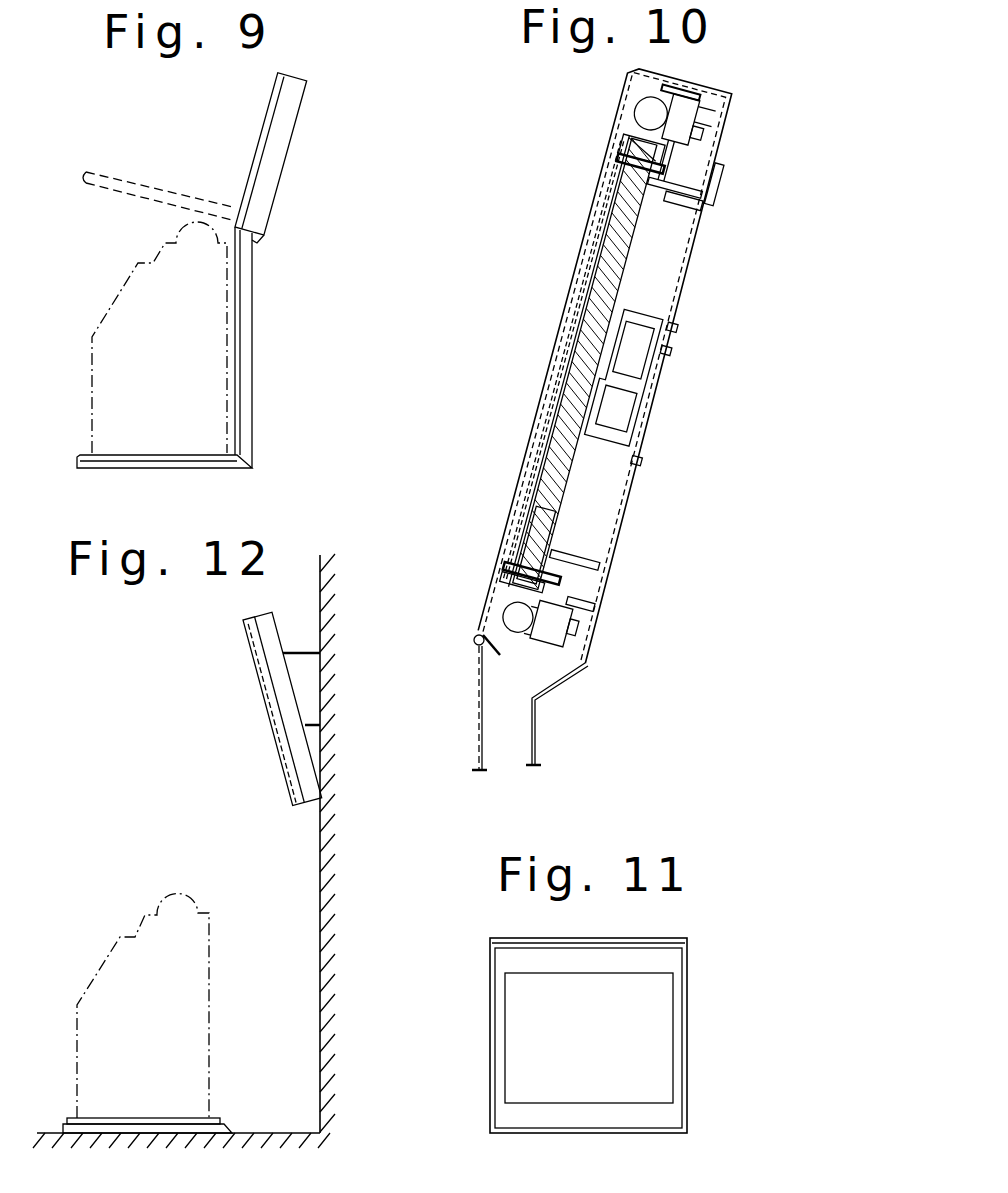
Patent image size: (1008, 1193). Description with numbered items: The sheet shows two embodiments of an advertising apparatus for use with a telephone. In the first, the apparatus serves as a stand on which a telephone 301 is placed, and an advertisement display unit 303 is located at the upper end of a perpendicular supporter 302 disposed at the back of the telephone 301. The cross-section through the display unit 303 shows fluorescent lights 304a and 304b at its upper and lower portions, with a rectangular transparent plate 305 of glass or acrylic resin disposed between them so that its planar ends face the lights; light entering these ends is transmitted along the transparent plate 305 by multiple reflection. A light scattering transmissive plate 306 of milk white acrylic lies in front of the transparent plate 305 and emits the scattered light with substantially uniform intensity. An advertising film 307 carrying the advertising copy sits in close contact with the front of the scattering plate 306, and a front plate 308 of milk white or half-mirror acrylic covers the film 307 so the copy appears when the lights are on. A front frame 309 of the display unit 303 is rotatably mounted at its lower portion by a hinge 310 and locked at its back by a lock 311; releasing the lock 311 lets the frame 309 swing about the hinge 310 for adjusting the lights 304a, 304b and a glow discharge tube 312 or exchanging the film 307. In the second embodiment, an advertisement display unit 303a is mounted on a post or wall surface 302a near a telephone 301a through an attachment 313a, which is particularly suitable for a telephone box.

In FIG. 9, the telephone 301 is at (215, 372).
In FIG. 9, the perpendicular supporter 302 is at (246, 312).
In FIG. 10, the perpendicular supporter 302 is at (533, 740).
In FIG. 9, the advertisement display unit 303 is at (277, 173).
In FIG. 10, the advertisement display unit 303 is at (630, 522).
In FIG. 10, the fluorescent light 304a is at (648, 112).
In FIG. 10, the fluorescent light 304b is at (515, 610).
In FIG. 10, the transparent plate 305 is at (533, 543).
In FIG. 10, the light scattering transmissive plate 306 is at (537, 463).
In FIG. 10, the advertising film 307 is at (550, 430).
In FIG. 10, the front plate 308 is at (560, 387).
In FIG. 10, the front frame 309 is at (613, 140).
In FIG. 10, the hinge 310 is at (474, 642).
In FIG. 10, the lock 311 is at (690, 207).
In FIG. 10, the glow discharge tube 312 is at (627, 407).
In FIG. 12, the telephone 301a is at (193, 1047).
In FIG. 12, the wall surface 302a is at (323, 957).
In FIG. 12, the advertisement display unit 303a is at (258, 700).
In FIG. 11, the advertisement display unit 303a is at (697, 1040).
In FIG. 12, the attachment 313a is at (302, 660).